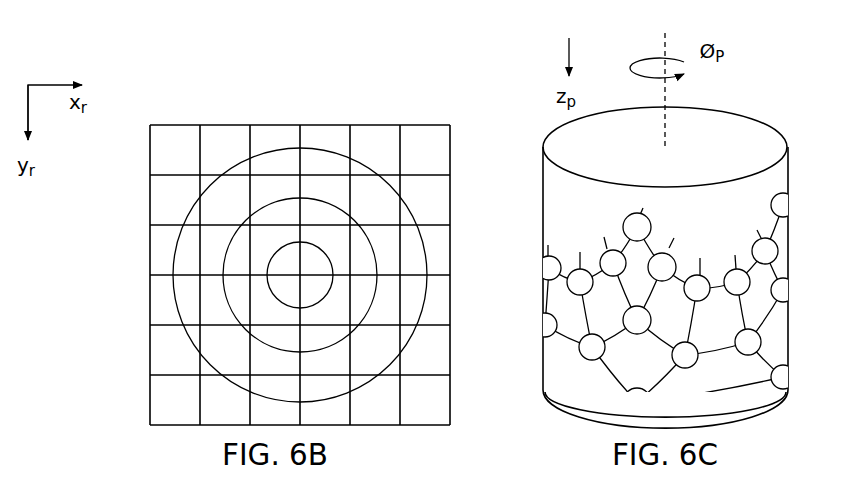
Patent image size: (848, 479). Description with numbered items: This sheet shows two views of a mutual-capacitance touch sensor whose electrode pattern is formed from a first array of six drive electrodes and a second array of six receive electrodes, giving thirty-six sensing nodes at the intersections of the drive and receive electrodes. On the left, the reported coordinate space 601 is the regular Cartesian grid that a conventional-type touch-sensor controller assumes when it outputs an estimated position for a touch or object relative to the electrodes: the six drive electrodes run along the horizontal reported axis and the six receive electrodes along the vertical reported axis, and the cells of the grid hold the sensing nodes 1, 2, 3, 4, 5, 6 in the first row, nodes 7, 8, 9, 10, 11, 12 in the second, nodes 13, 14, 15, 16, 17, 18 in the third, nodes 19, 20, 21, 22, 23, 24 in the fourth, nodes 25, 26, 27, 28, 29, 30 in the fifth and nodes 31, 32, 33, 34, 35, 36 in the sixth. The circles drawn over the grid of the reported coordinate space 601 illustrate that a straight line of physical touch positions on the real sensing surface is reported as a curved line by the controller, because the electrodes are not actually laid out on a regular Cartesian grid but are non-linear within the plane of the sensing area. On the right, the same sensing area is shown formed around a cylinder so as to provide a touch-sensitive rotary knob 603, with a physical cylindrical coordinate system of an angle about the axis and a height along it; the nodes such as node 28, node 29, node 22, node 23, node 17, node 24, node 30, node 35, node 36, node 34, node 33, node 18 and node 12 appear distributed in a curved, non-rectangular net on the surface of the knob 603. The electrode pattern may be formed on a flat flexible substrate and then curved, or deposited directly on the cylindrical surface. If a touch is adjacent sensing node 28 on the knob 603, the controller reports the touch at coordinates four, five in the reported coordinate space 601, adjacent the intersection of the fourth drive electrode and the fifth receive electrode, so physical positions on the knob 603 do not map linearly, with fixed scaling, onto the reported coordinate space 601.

In FIG. 6B, the reported coordinate space 601 is at (314, 249).
In FIG. 6C, the touch-sensitive rotary knob 603 is at (636, 267).
In FIG. 6B, the sensing node 1 is at (175, 150).
In FIG. 6B, the sensing node 2 is at (225, 150).
In FIG. 6B, the sensing node 3 is at (275, 150).
In FIG. 6B, the sensing node 4 is at (325, 150).
In FIG. 6B, the sensing node 5 is at (375, 150).
In FIG. 6B, the sensing node 6 is at (425, 150).
In FIG. 6C, the sensing node 6 is at (783, 205).
In FIG. 6B, the sensing node 7 is at (175, 200).
In FIG. 6B, the sensing node 8 is at (225, 200).
In FIG. 6B, the sensing node 9 is at (275, 200).
In FIG. 6B, the sensing node 10 is at (324, 200).
In FIG. 6B, the sensing node 11 is at (374, 200).
In FIG. 6C, the sensing node 11 is at (783, 290).
In FIG. 6B, the sensing node 12 is at (424, 200).
In FIG. 6C, the sensing node 12 is at (765, 251).
In FIG. 6B, the sensing node 13 is at (174, 250).
In FIG. 6B, the sensing node 14 is at (224, 250).
In FIG. 6B, the sensing node 15 is at (274, 250).
In FIG. 6B, the sensing node 16 is at (324, 250).
In FIG. 6C, the sensing node 16 is at (783, 377).
In FIG. 6B, the sensing node 17 is at (374, 250).
In FIG. 6C, the sensing node 17 is at (748, 342).
In FIG. 6B, the sensing node 18 is at (424, 250).
In FIG. 6C, the sensing node 18 is at (737, 282).
In FIG. 6B, the sensing node 19 is at (174, 300).
In FIG. 6B, the sensing node 20 is at (224, 300).
In FIG. 6B, the sensing node 21 is at (274, 300).
In FIG. 6B, the sensing node 22 is at (324, 300).
In FIG. 6C, the sensing node 22 is at (637, 402).
In FIG. 6B, the sensing node 23 is at (374, 300).
In FIG. 6C, the sensing node 23 is at (685, 355).
In FIG. 6B, the sensing node 24 is at (424, 300).
In FIG. 6C, the sensing node 24 is at (697, 288).
In FIG. 6B, the sensing node 25 is at (174, 350).
In FIG. 6B, the sensing node 26 is at (224, 350).
In FIG. 6B, the sensing node 27 is at (274, 350).
In FIG. 6C, the sensing node 27 is at (545, 325).
In FIG. 6B, the sensing node 28 is at (324, 350).
In FIG. 6C, the sensing node 28 is at (592, 347).
In FIG. 6B, the sensing node 29 is at (374, 350).
In FIG. 6C, the sensing node 29 is at (637, 320).
In FIG. 6B, the sensing node 30 is at (424, 350).
In FIG. 6C, the sensing node 30 is at (662, 267).
In FIG. 6B, the sensing node 31 is at (174, 400).
In FIG. 6B, the sensing node 32 is at (224, 400).
In FIG. 6B, the sensing node 33 is at (274, 400).
In FIG. 6C, the sensing node 33 is at (549, 268).
In FIG. 6B, the sensing node 34 is at (324, 400).
In FIG. 6C, the sensing node 34 is at (580, 282).
In FIG. 6B, the sensing node 35 is at (374, 400).
In FIG. 6C, the sensing node 35 is at (613, 263).
In FIG. 6B, the sensing node 36 is at (424, 400).
In FIG. 6C, the sensing node 36 is at (637, 227).